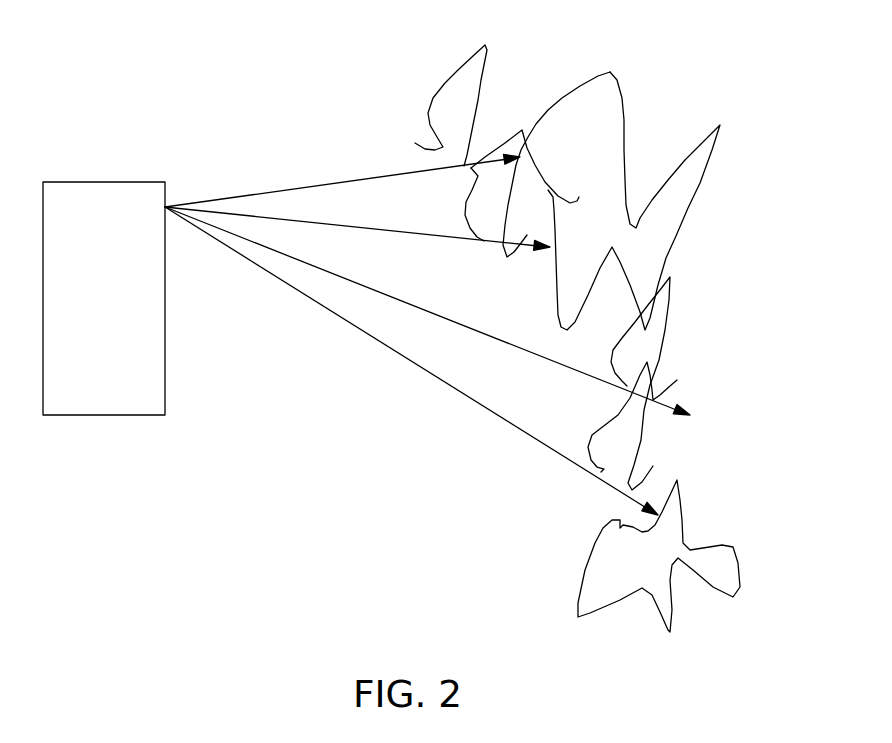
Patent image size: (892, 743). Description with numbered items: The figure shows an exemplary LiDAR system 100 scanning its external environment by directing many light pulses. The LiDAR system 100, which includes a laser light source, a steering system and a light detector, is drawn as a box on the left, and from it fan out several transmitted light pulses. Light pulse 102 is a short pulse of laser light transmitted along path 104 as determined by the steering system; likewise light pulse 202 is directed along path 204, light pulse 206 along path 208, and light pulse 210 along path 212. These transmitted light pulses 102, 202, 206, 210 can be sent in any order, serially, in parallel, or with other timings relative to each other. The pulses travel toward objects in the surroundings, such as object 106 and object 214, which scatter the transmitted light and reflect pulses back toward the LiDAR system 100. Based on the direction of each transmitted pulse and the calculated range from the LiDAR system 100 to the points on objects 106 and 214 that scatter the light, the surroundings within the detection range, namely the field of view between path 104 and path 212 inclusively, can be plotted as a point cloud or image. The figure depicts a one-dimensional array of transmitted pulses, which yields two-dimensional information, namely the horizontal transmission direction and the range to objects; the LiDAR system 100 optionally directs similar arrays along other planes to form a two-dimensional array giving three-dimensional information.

The LiDAR system 100 is at (125, 311).
The light pulse 102 is at (452, 68).
The path 104 is at (313, 182).
The object 106 is at (697, 197).
The light pulse 202 is at (466, 187).
The path 204 is at (411, 233).
The light pulse 206 is at (672, 328).
The path 208 is at (470, 330).
The light pulse 210 is at (633, 452).
The path 212 is at (512, 425).
The object 214 is at (742, 570).